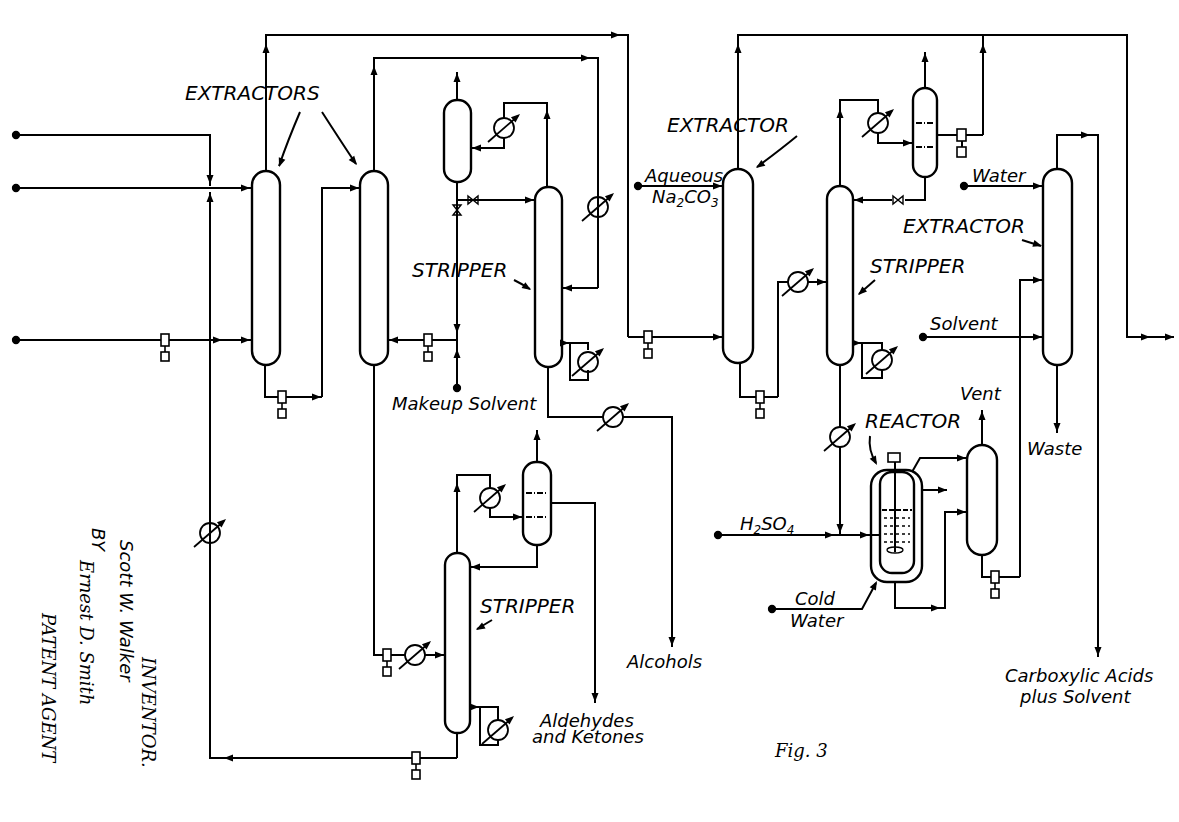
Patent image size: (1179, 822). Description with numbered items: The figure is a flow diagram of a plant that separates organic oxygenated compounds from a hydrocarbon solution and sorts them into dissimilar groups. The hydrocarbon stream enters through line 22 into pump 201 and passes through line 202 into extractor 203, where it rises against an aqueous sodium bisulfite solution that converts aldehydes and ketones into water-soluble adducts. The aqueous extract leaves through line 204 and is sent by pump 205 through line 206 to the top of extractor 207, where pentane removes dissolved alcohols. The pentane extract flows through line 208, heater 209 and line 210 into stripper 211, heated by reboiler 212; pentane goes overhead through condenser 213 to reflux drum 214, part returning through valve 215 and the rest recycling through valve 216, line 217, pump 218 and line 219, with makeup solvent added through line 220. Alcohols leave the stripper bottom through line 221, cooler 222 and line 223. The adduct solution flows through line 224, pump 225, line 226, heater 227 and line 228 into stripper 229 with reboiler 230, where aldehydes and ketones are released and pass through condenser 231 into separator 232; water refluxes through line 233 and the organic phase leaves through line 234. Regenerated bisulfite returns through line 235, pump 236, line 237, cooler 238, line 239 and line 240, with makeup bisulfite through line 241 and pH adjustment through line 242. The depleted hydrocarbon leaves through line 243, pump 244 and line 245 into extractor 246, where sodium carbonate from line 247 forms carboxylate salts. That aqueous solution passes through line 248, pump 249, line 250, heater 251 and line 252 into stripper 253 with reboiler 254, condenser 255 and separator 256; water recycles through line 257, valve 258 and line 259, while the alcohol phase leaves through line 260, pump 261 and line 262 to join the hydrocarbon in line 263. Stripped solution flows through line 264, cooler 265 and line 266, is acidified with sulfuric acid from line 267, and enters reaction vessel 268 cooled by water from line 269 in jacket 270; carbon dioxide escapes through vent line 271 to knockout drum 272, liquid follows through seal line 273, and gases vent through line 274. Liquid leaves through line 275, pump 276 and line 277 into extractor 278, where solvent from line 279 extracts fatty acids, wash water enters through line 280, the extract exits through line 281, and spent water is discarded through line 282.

The line 22 is at (58, 345).
The pump 201 is at (164, 365).
The line 202 is at (196, 338).
The extractor 203 is at (252, 253).
The line 204 is at (265, 392).
The pump 205 is at (281, 420).
The line 206 is at (321, 304).
The extractor 207 is at (360, 243).
The line 208 is at (447, 58).
The heater 209 is at (598, 197).
The line 210 is at (595, 290).
The stripper 211 is at (562, 252).
The reboiler 212 is at (595, 373).
The condenser 213 is at (516, 140).
The reflux drum 214 is at (444, 110).
The valve 215 is at (475, 205).
The valve 216 is at (452, 212).
The line 217 is at (457, 316).
The pump 218 is at (430, 333).
The line 219 is at (410, 340).
The line 220 is at (457, 370).
The line 221 is at (585, 418).
The cooler 222 is at (615, 428).
The line 223 is at (672, 583).
The line 224 is at (374, 500).
The pump 225 is at (383, 678).
The line 226 is at (396, 649).
The heater 227 is at (405, 684).
The line 228 is at (428, 666).
The stripper 229 is at (445, 585).
The reboiler 230 is at (503, 741).
The condenser 231 is at (481, 497).
The separator 232 is at (523, 466).
The line 233 is at (507, 568).
The line 234 is at (595, 655).
The line 235 is at (456, 759).
The pump 236 is at (410, 778).
The line 237 is at (212, 718).
The cooler 238 is at (222, 541).
The line 239 is at (210, 247).
The line 240 is at (226, 190).
The line 241 is at (70, 190).
The line 242 is at (63, 138).
The line 243 is at (447, 34).
The pump 244 is at (652, 367).
The line 245 is at (695, 337).
The extractor 246 is at (723, 267).
The line 247 is at (640, 192).
The line 248 is at (740, 392).
The pump 249 is at (759, 420).
The line 250 is at (778, 335).
The heater 251 is at (798, 271).
The line 252 is at (800, 292).
The stripper 253 is at (827, 223).
The reboiler 254 is at (893, 368).
The condenser 255 is at (869, 127).
The separator 256 is at (913, 97).
The line 257 is at (925, 200).
The valve 258 is at (898, 206).
The line 259 is at (886, 200).
The line 260 is at (958, 124).
The pump 261 is at (967, 156).
The line 262 is at (985, 102).
The line 263 is at (738, 85).
The line 264 is at (840, 397).
The cooler 265 is at (830, 437).
The line 266 is at (840, 490).
The line 267 is at (784, 541).
The reaction vessel 268 is at (872, 552).
The line 269 is at (862, 611).
The jacket 270 is at (870, 575).
The vent line 271 is at (943, 457).
The knockout drum 272 is at (958, 476).
The seal line 273 is at (922, 609).
The line 274 is at (984, 426).
The line 275 is at (990, 577).
The pump 276 is at (997, 600).
The line 277 is at (1020, 552).
The extractor 278 is at (1043, 267).
The line 279 is at (975, 340).
The line 280 is at (1008, 192).
The line 281 is at (1088, 135).
The line 282 is at (1063, 420).